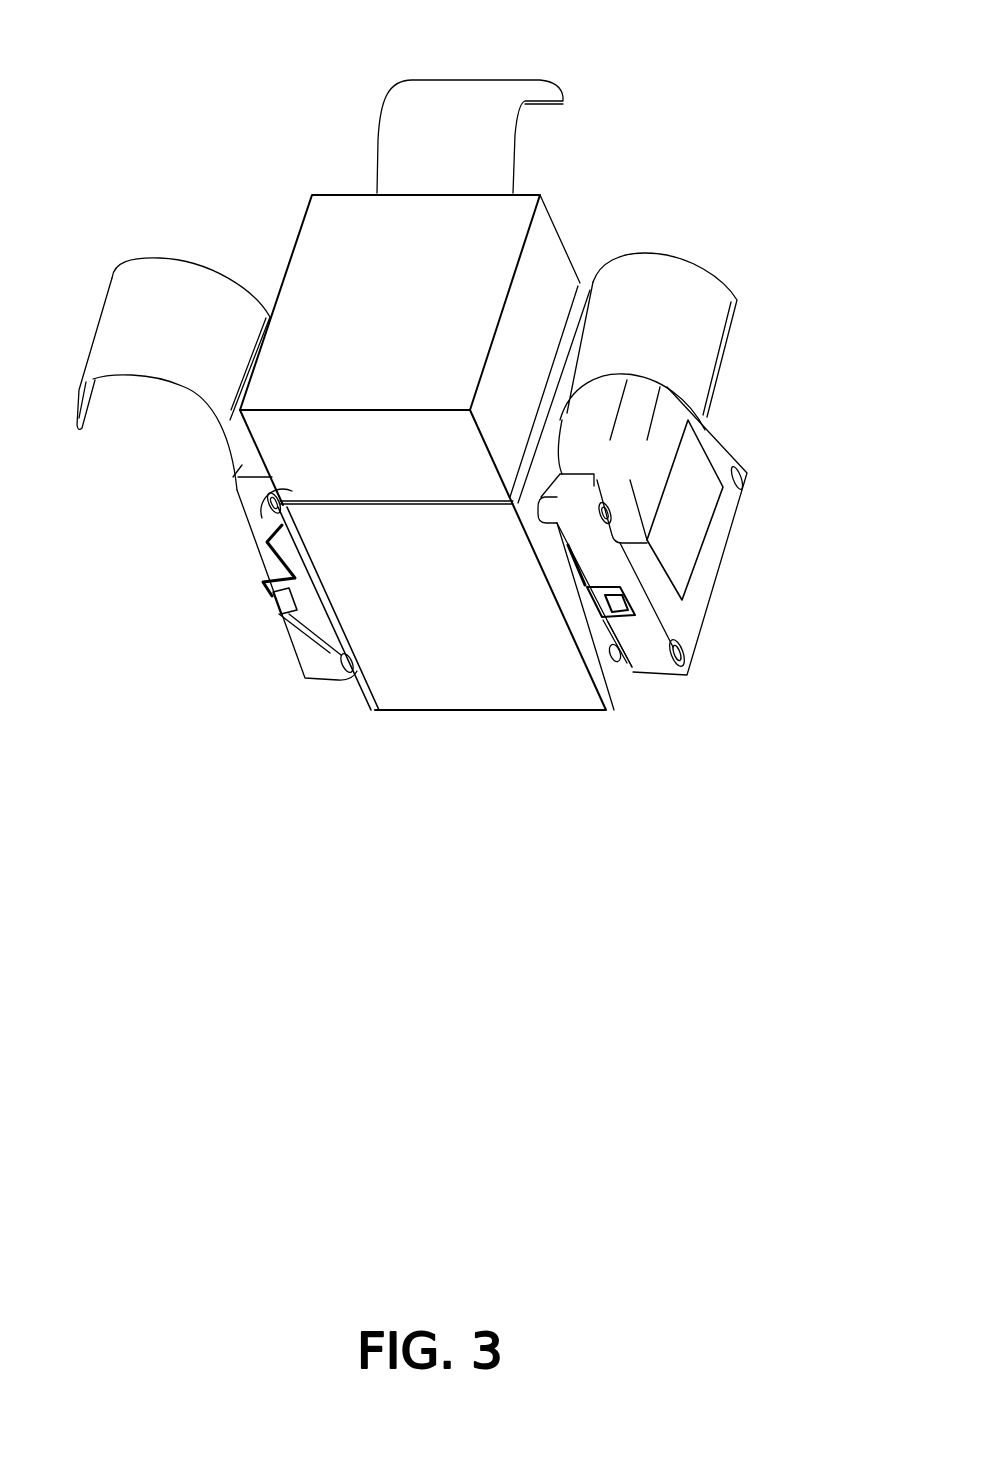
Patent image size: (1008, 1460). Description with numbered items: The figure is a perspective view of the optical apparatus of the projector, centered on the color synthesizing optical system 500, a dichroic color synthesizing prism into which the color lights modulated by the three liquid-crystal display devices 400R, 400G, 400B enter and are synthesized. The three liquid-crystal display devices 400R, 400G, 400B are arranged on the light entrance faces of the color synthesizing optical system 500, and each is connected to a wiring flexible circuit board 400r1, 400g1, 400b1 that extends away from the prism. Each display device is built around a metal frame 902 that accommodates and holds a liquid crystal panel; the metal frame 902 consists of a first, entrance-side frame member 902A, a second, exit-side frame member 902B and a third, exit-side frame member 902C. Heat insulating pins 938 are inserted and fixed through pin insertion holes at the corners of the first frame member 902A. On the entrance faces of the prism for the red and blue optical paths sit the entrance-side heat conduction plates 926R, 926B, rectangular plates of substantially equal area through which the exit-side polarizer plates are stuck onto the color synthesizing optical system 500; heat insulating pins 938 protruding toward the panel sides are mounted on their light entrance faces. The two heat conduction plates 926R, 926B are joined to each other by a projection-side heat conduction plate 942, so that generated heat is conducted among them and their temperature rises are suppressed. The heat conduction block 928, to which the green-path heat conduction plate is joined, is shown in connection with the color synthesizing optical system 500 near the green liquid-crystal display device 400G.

The color synthesizing optical system 500 is at (391, 734).
The projection-side heat conduction plate 942 is at (465, 700).
The wiring flexible circuit board 400g1 is at (417, 92).
The liquid-crystal display device 400G is at (597, 203).
The heat conduction block 928 is at (547, 223).
The wiring flexible circuit board 400r1 is at (180, 273).
The liquid-crystal display device 400R is at (193, 507).
The entrance-side heat conduction plate 926R is at (328, 630).
The second frame member 902B is at (270, 614).
The third frame member 902C is at (268, 561).
The first frame member 902A is at (288, 657).
The metal frame 902 is at (120, 625).
The heat insulating pins 938 is at (272, 508).
The wiring flexible circuit board 400b1 is at (675, 273).
The liquid-crystal display device 400B is at (739, 416).
The entrance-side heat conduction plate 926B is at (627, 393).